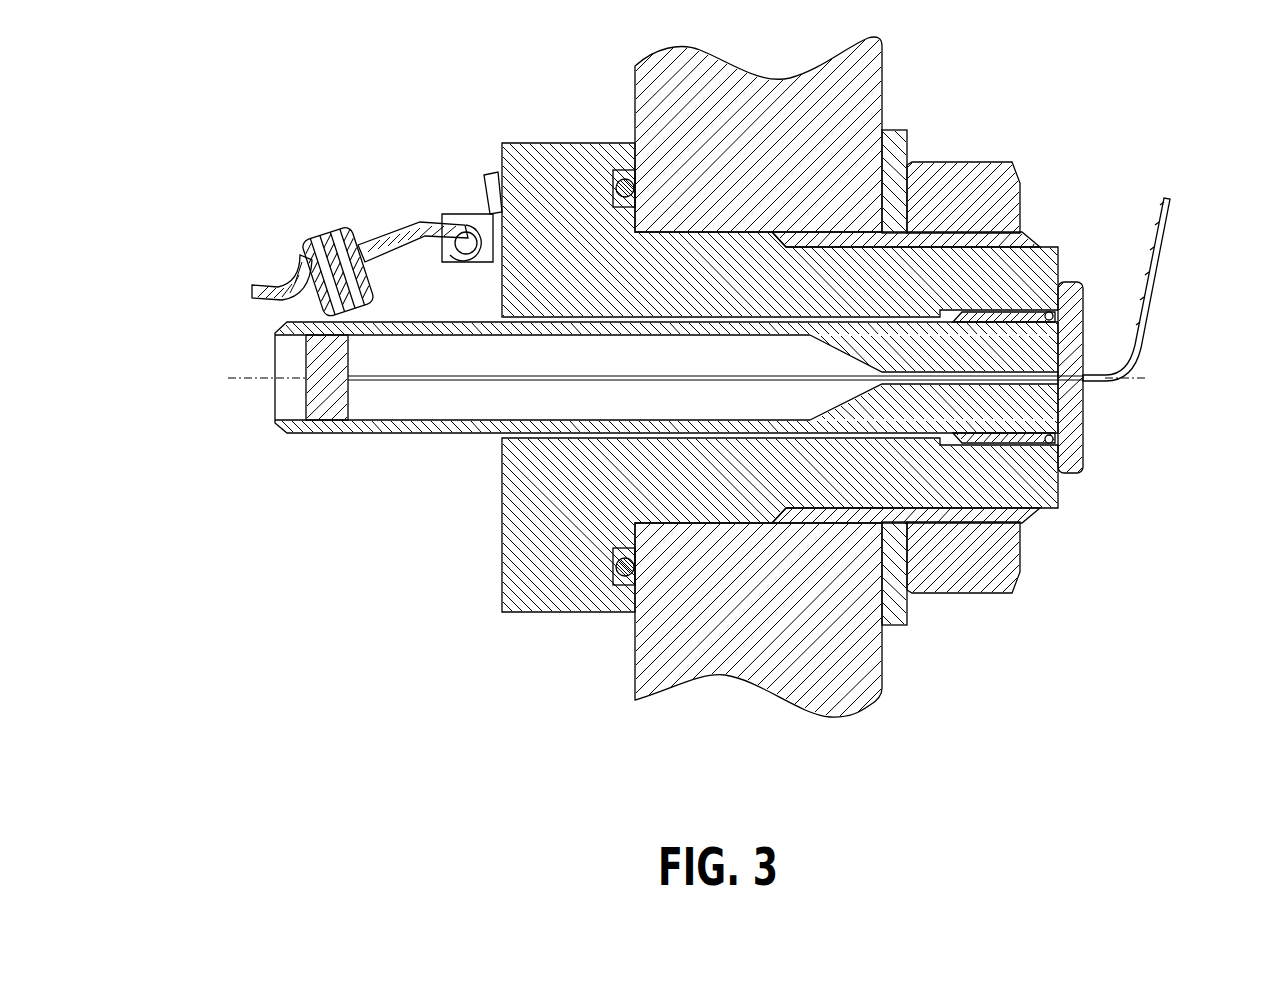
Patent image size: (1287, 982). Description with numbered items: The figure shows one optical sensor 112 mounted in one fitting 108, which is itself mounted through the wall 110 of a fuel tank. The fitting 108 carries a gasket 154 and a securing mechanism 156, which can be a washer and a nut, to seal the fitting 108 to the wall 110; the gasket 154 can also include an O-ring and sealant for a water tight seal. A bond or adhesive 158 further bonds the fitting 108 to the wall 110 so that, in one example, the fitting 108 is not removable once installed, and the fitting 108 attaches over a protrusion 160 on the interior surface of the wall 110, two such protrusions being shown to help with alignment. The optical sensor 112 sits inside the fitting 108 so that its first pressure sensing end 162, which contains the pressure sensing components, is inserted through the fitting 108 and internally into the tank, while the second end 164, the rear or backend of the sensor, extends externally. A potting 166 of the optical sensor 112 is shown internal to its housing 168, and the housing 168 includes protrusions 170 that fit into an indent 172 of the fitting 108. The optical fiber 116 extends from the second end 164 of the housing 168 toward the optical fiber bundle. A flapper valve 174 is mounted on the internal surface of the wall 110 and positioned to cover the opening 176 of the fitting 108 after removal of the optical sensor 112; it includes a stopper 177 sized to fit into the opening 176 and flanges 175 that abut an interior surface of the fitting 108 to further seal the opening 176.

The fitting 108 is at (566, 137).
The wall 110 is at (857, 737).
The optical sensor 112 is at (294, 404).
The optical fiber 116 is at (1180, 245).
The gasket 154 is at (912, 121).
The securing mechanism 156 is at (980, 142).
The bond or adhesive 158 is at (978, 524).
The protrusion 160 is at (604, 587).
The first pressure sensing end 162 is at (200, 381).
The second end 164 is at (1166, 380).
The potting 166 is at (496, 405).
The housing 168 is at (1099, 444).
The protrusions 170 is at (1014, 458).
The indent 172 is at (965, 461).
The flapper valve 174 is at (314, 231).
The flanges 175 is at (256, 269).
The opening 176 is at (500, 445).
The stopper 177 is at (381, 285).